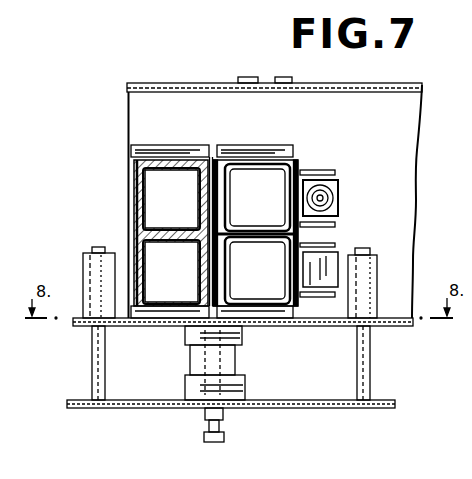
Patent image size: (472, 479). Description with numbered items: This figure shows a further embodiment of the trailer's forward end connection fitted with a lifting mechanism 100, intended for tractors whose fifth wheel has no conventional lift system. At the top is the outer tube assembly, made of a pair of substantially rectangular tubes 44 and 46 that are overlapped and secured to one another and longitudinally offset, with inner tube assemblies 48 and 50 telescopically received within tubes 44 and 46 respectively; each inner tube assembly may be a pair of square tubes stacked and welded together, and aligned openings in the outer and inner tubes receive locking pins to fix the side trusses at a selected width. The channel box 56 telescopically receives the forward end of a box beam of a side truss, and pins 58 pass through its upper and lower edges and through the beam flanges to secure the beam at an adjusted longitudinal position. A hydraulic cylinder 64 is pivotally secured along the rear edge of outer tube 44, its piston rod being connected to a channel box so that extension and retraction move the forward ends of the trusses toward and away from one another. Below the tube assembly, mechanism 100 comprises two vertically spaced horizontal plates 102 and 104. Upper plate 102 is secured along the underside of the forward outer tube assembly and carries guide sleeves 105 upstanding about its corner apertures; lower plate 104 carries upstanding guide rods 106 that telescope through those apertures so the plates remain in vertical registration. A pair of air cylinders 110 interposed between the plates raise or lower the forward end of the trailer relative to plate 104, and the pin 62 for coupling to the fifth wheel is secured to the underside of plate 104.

The channel box 56 is at (183, 101).
The pins 58 is at (240, 77).
The rectangular tube 46 is at (153, 217).
The inner tube assembly 50 is at (138, 192).
The rectangular tube 44 is at (255, 217).
The inner tube assembly 48 is at (272, 168).
The hydraulic cylinder 64 is at (340, 201).
The guide sleeves 105 is at (370, 258).
The lifting mechanism 100 is at (388, 348).
The upper plate 102 is at (280, 326).
The lower plate 104 is at (285, 400).
The guide rods 106 is at (371, 360).
The air cylinders 110 is at (190, 360).
The pin 62 is at (205, 423).